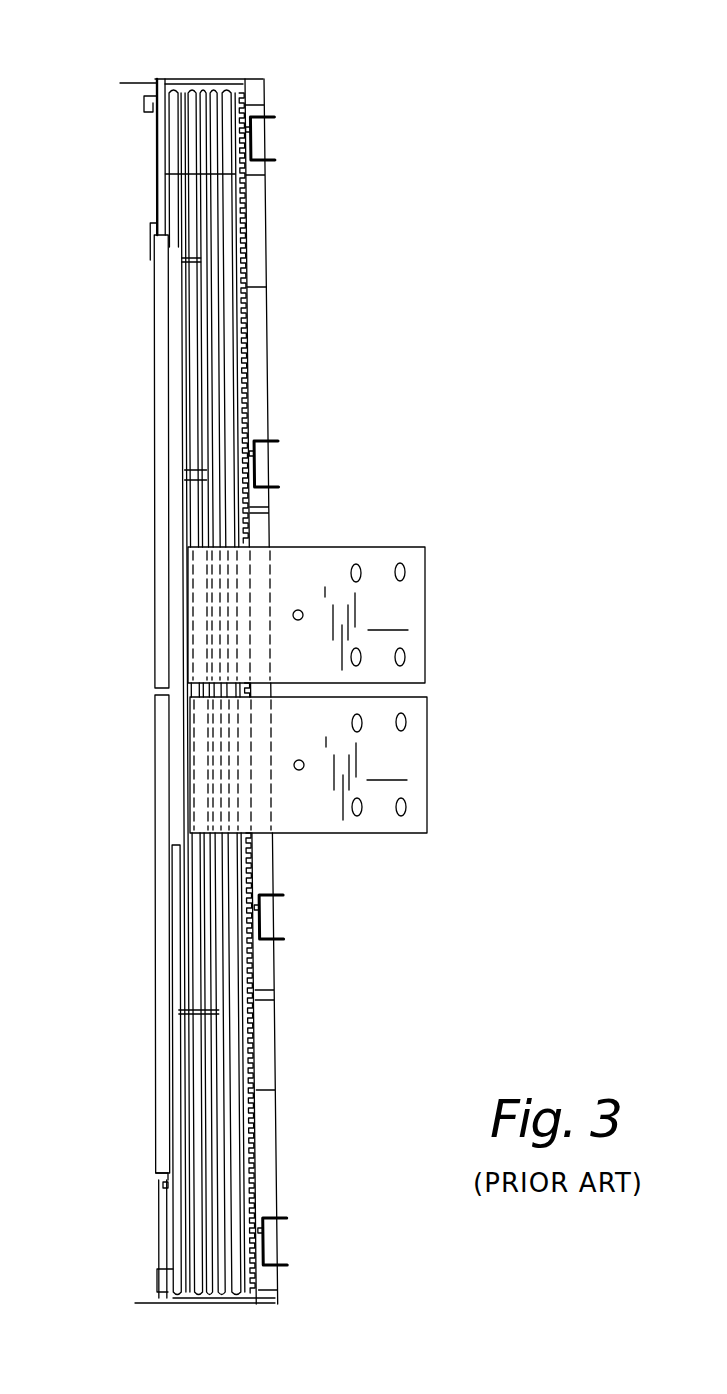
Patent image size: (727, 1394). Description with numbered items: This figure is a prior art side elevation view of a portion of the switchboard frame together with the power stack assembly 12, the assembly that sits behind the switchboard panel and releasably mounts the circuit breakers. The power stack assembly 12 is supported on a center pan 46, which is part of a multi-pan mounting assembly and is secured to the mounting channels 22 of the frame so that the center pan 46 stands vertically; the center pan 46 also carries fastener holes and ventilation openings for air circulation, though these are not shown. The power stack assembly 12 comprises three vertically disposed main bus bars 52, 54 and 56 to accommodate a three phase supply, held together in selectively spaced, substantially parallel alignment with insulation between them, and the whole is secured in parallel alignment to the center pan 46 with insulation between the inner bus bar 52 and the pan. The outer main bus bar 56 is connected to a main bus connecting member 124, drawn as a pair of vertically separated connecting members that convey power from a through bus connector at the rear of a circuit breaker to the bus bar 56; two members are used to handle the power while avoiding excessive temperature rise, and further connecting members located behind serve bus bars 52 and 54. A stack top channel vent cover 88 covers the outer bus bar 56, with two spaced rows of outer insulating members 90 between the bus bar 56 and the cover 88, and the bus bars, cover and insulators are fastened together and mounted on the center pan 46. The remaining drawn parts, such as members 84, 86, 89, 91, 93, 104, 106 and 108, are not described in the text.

The power stack assembly 12 is at (85, 348).
The mounting channels 22 is at (265, 135).
The center pan 46 is at (257, 237).
The main bus bar 52 is at (228, 410).
The main bus bar 54 is at (206, 432).
The main bus bar 56 is at (182, 493).
The serrated strip 84 is at (247, 175).
The guide strip 86 is at (247, 200).
The stack top channel vent cover 88 is at (162, 602).
The frame wall 89 is at (157, 150).
The outer insulating members 90 is at (172, 128).
The lower frame wall 91 is at (172, 1210).
The latch 93 is at (150, 93).
The bottom plate 104 is at (208, 1303).
The top plate 106 is at (190, 79).
The stop 108 is at (170, 1147).
The main bus connecting member 124 is at (307, 690).